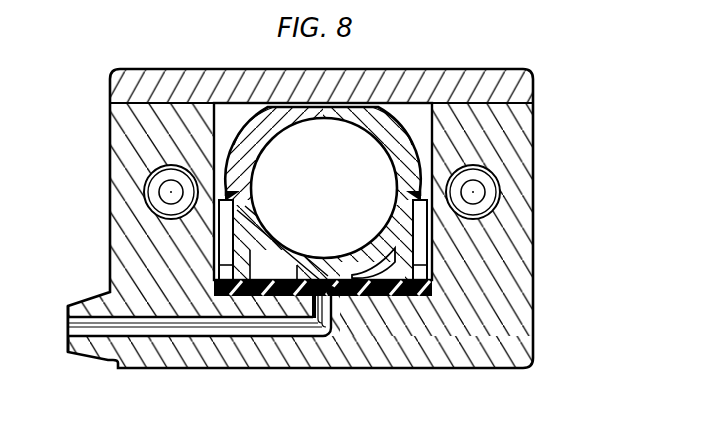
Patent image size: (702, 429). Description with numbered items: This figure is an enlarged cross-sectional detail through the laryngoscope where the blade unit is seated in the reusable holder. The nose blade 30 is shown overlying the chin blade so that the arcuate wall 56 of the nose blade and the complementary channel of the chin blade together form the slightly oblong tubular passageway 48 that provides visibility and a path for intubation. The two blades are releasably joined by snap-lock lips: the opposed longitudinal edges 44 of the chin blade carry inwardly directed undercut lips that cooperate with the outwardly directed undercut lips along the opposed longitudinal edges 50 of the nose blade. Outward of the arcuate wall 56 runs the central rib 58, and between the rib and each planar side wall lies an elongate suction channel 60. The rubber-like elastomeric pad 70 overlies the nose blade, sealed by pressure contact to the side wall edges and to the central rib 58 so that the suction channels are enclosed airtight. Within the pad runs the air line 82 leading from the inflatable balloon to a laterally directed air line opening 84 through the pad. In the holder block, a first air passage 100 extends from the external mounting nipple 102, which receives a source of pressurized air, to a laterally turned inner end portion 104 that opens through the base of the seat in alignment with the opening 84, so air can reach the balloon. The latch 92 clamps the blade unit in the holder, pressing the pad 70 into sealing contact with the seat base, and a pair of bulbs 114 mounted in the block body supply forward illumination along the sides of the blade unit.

The nose blade 30 is at (217, 223).
The opposed longitudinal edges of the chin blade 44 is at (250, 206).
The tubular passageway 48 is at (292, 140).
The opposed longitudinal edges of the nose blade 50 is at (405, 191).
The arcuate wall 56 is at (262, 222).
The central rib 58 is at (380, 248).
The suction channel 60 is at (265, 270).
The elastomeric pad 70 is at (412, 295).
The air line 82 is at (343, 278).
The air line opening 84 is at (330, 302).
The latch 92 is at (438, 72).
The first air passage 100 is at (188, 328).
The external mounting nipple 102 is at (84, 340).
The laterally turned inner end portion 104 is at (347, 340).
The bulbs 114 is at (158, 192).